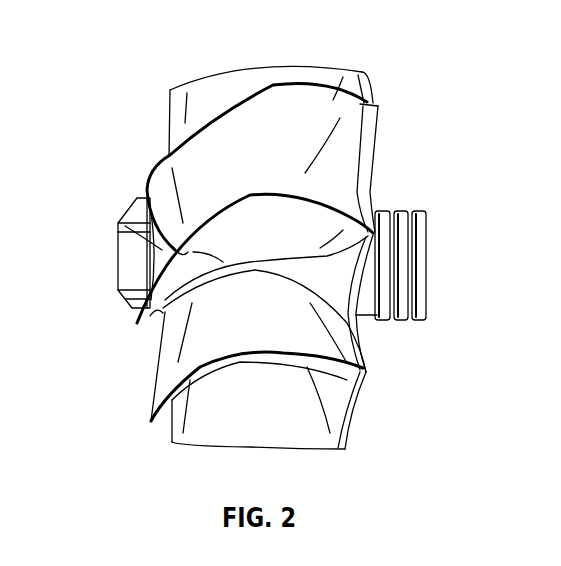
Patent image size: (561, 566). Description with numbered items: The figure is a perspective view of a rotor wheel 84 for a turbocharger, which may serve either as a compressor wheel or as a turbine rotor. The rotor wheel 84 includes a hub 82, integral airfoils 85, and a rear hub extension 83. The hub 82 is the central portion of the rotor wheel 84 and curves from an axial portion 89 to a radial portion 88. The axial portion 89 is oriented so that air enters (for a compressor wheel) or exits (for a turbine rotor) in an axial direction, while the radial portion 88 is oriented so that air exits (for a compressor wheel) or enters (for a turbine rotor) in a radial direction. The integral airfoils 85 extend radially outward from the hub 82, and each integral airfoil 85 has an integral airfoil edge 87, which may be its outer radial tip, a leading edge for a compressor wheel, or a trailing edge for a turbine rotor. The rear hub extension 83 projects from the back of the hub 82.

The hub 82 is at (126, 271).
The rear hub extension 83 is at (395, 321).
The rotor wheel 84 is at (127, 41).
The integral airfoils 85 is at (180, 108).
The integral airfoil edge 87 is at (300, 69).
The radial portion 88 is at (343, 203).
The axial portion 89 is at (125, 226).